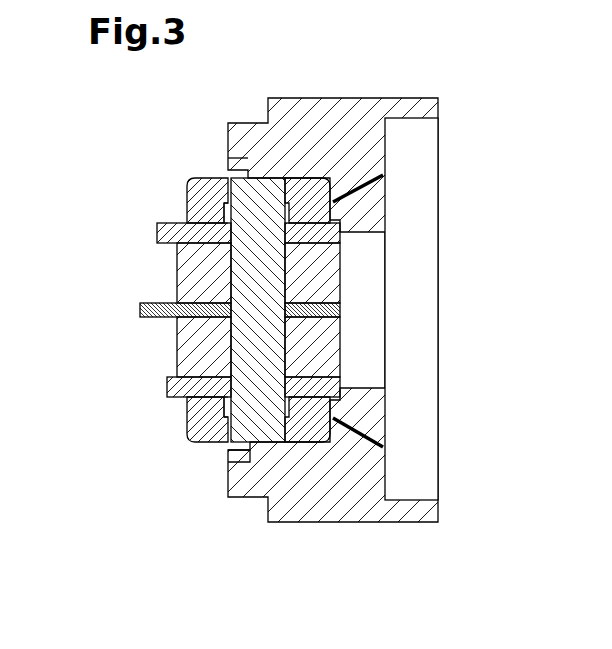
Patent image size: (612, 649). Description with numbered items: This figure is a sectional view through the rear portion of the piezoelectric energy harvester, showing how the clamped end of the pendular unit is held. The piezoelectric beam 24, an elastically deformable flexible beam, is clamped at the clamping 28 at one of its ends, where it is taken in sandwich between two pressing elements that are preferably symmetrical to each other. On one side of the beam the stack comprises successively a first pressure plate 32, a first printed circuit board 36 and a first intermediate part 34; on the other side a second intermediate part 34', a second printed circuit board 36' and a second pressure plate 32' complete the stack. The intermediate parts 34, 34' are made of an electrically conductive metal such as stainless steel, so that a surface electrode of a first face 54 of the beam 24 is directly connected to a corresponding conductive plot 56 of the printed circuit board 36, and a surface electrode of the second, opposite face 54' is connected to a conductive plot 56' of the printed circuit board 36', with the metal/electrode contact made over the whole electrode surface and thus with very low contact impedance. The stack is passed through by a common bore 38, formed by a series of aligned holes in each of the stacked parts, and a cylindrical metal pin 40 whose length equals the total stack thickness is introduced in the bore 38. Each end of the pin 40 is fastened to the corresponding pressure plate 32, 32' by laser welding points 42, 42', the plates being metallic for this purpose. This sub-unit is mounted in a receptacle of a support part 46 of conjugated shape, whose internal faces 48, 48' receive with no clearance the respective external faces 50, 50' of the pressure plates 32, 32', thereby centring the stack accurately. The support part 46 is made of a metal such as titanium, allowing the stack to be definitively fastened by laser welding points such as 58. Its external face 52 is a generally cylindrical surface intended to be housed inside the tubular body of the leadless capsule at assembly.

The piezoelectric beam 24 is at (157, 322).
The clamping 28 is at (203, 496).
The first pressure plate 32 is at (172, 189).
The second pressure plate 32' is at (169, 428).
The first intermediate part 34 is at (211, 300).
The second intermediate part 34' is at (161, 353).
The first printed circuit board 36 is at (164, 221).
The second printed circuit board 36' is at (160, 403).
The common bore 38 is at (175, 265).
The pin 40 is at (255, 187).
The laser welding point 42 is at (255, 136).
The laser welding point 42' is at (271, 485).
The support part 46 is at (408, 107).
The internal face 48 is at (198, 178).
The internal face 48' is at (210, 440).
The external face 50 is at (307, 137).
The external face 50' is at (331, 485).
The external face 52 is at (346, 95).
The first face 54 is at (386, 278).
The second face 54' is at (390, 347).
The conductive plot 56 is at (386, 248).
The conductive plot 56' is at (390, 376).
The laser welding point 58 is at (336, 202).